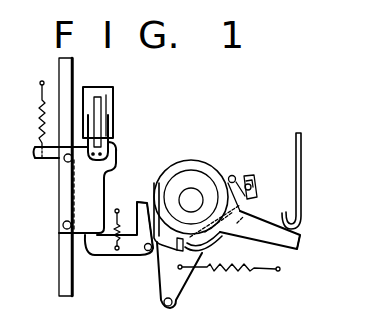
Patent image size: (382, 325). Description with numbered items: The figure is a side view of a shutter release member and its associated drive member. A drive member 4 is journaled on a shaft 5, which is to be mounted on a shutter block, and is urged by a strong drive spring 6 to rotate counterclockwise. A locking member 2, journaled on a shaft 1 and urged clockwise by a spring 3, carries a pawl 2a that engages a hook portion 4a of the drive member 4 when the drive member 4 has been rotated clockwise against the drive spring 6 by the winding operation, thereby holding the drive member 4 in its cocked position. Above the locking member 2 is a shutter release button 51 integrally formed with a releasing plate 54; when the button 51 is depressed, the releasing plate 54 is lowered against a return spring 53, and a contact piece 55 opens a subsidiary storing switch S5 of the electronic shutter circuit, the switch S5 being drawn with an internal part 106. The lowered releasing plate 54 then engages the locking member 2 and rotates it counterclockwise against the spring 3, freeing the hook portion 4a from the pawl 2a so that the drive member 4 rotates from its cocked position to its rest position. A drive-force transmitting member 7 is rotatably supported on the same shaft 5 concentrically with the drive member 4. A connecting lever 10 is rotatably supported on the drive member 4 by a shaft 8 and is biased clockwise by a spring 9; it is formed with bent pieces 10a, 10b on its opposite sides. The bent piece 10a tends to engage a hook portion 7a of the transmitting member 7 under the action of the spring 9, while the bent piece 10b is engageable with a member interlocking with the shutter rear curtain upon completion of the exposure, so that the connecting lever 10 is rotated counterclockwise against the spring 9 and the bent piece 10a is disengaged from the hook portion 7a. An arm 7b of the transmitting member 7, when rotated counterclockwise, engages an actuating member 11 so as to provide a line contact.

The shutter release button 51 is at (60, 64).
The return spring 53 is at (38, 100).
The releasing plate 54 is at (80, 190).
The subsidiary storing switch S5 is at (95, 87).
The switch contact 106 is at (108, 107).
The contact piece 55 is at (108, 145).
The drive-force transmitting member 7 is at (182, 170).
The shaft 5 is at (195, 190).
The spring 9 is at (231, 175).
The connecting lever 10 is at (252, 198).
The bent piece 10b is at (250, 180).
The shaft 8 is at (253, 218).
The arm 7b is at (302, 245).
The hook portion 7a is at (213, 254).
The actuating member 11 is at (302, 137).
The hook portion 4a is at (153, 186).
The locking member 2 is at (95, 256).
The pawl 2a is at (143, 202).
The spring 3 is at (119, 214).
The shaft 1 is at (132, 257).
The bent piece 10a is at (176, 245).
The drive member 4 is at (178, 293).
The drive spring 6 is at (255, 273).